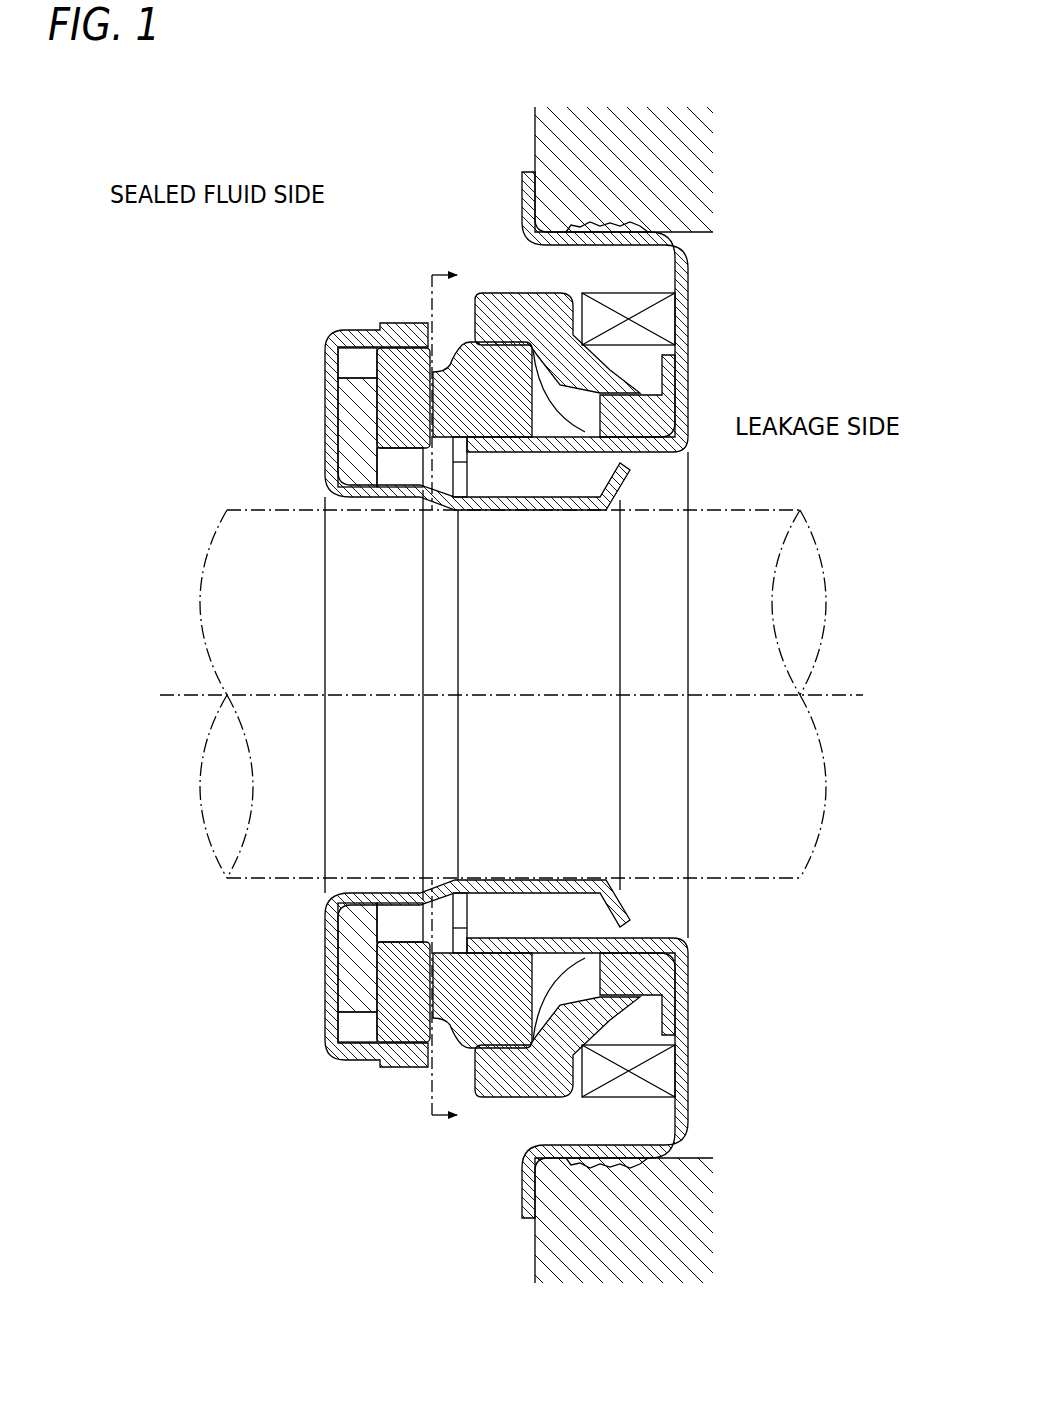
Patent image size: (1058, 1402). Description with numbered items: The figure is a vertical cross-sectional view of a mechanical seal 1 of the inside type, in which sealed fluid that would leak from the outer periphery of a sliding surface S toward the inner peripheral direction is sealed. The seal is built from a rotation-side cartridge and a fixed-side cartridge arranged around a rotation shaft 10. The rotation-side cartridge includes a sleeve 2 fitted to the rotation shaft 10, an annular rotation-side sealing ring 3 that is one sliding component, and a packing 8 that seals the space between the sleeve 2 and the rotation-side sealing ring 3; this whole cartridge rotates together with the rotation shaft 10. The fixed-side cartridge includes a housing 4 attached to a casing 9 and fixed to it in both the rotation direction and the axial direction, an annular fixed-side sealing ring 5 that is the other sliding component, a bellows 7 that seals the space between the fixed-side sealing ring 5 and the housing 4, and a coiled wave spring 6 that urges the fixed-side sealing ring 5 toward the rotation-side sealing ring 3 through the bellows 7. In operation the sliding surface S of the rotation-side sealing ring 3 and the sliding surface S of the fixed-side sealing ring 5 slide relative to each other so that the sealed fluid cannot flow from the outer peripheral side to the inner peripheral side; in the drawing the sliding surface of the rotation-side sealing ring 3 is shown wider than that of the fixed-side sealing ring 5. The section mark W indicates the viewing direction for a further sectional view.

The mechanical seal 1 is at (196, 347).
The sleeve 2 is at (336, 407).
The rotation-side sealing ring 3 is at (340, 372).
The housing 4 is at (686, 268).
The fixed-side sealing ring 5 is at (497, 412).
The coiled wave spring 6 is at (662, 320).
The bellows 7 is at (506, 325).
The packing 8 is at (358, 448).
The casing 9 is at (556, 145).
The rotation shaft 10 is at (280, 884).
The sliding surface S is at (418, 440).
The section line W is at (442, 701).